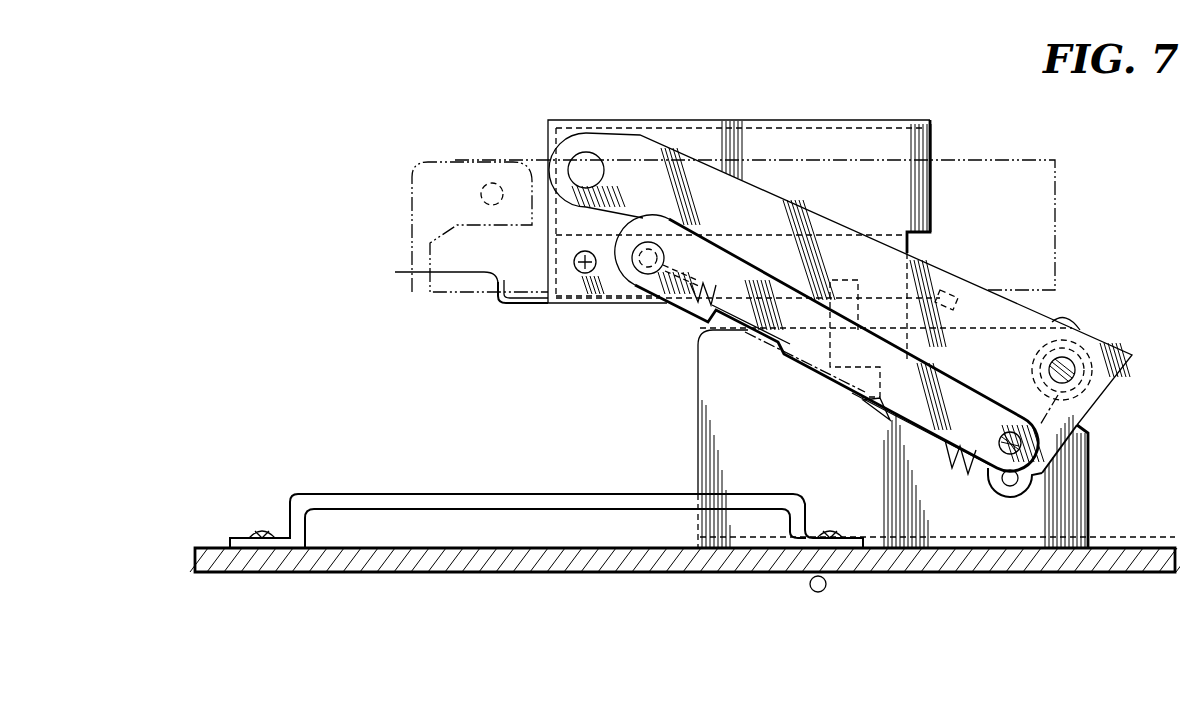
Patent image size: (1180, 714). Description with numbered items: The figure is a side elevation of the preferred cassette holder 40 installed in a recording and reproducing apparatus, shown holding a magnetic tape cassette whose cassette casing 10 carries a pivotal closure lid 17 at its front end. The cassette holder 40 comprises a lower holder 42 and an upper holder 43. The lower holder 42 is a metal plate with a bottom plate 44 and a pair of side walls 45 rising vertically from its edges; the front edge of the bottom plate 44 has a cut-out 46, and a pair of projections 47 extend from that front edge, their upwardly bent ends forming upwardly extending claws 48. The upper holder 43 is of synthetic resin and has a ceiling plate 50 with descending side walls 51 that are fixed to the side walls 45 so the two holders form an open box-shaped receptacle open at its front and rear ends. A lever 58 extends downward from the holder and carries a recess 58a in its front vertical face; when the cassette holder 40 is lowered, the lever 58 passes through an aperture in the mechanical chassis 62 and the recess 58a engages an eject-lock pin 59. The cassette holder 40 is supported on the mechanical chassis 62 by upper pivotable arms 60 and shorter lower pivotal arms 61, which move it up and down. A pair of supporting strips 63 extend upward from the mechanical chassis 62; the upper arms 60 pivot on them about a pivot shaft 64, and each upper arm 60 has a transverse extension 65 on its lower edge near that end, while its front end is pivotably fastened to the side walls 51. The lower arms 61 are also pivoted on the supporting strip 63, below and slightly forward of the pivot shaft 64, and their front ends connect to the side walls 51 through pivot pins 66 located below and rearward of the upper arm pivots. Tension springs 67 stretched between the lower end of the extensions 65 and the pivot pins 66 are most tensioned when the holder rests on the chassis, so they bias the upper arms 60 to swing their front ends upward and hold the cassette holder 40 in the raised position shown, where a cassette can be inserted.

The cassette casing 10 is at (977, 168).
The pivotal closure lid 17 is at (455, 160).
The cassette holder 40 is at (668, 119).
The lower holder 42 is at (530, 306).
The upper holder 43 is at (908, 130).
The bottom plate 44 is at (947, 291).
The side walls 45 is at (843, 247).
The cut-out 46 is at (595, 298).
The projections 47 is at (500, 306).
The claws 48 is at (395, 272).
The ceiling plate 50 is at (578, 118).
The side walls 51 is at (775, 130).
The lever 58 is at (905, 415).
The recess 58a is at (865, 392).
The eject-lock pin 59 is at (827, 586).
The upper pivotable arms 60 is at (1050, 318).
The lower pivotal arms 61 is at (982, 404).
The mechanical chassis 62 is at (1118, 553).
The supporting strips 63 is at (1079, 482).
The pivot shaft 64 is at (1068, 365).
The transverse extension 65 is at (1050, 456).
The pivot pins 66 is at (652, 256).
The tension springs 67 is at (750, 335).